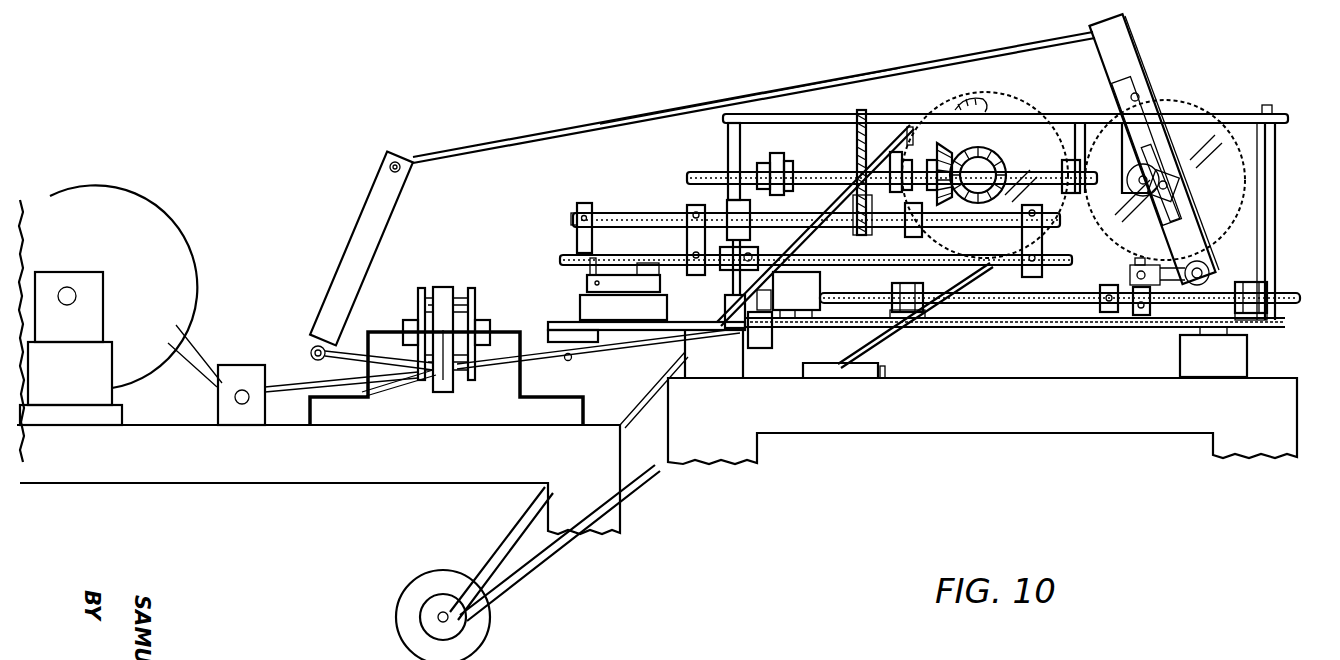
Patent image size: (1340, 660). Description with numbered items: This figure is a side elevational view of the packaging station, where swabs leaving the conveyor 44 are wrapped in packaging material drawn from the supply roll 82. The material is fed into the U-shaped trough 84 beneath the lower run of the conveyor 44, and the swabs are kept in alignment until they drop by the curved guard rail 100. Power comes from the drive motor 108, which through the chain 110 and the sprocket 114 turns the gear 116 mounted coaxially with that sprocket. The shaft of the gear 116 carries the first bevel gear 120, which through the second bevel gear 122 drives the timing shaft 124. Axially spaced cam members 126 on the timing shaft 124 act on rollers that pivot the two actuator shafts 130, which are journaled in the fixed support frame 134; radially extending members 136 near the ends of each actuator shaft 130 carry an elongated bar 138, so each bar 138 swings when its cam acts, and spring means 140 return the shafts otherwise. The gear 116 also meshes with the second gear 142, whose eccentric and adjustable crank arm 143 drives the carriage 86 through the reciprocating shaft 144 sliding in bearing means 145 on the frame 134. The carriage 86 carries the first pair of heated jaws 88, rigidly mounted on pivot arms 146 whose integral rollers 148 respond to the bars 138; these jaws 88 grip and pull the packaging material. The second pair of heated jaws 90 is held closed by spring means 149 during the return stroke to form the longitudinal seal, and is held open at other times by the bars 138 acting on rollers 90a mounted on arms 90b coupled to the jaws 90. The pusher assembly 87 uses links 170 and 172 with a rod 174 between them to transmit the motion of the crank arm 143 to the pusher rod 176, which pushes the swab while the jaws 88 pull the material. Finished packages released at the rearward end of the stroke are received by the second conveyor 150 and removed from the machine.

The conveyor 44 is at (467, 272).
The supply roll of packaging material 82 is at (293, 385).
The U-shaped trough 84 is at (403, 390).
The carriage 86 is at (812, 303).
The pusher assembly 87 is at (834, 69).
The first pair of heated jaws 88 is at (757, 348).
The second pair of heated jaws 90 is at (572, 359).
The rollers 90a is at (660, 276).
The arms 90b is at (587, 280).
The curved guard rail 100 is at (445, 393).
The drive motor 108 is at (410, 590).
The chain 110 is at (498, 543).
The sprocket 114 is at (976, 98).
The gear 116 is at (1003, 107).
The first bevel gear 120 is at (1000, 154).
The second bevel gear 122 is at (947, 152).
The timing shaft 124 is at (702, 172).
The cam members 126 is at (776, 155).
The actuator shafts 130 is at (612, 212).
The fixed support frame 134 is at (858, 104).
The radially extending members 136 is at (577, 212).
The elongated bar 138 is at (648, 255).
The spring means 140 is at (858, 162).
The second gear 142 is at (1180, 100).
The eccentric and adjustable crank arm 143 is at (1198, 255).
The reciprocating shaft 144 is at (997, 314).
The bearing means 145 is at (905, 312).
The pivot arms 146 is at (820, 284).
The rollers 148 is at (853, 258).
The spring means 149 is at (548, 330).
The second conveyor 150 is at (829, 354).
The link 170 is at (1128, 45).
The link 172 is at (342, 262).
The rod 174 is at (515, 142).
The pusher rod 176 is at (352, 352).